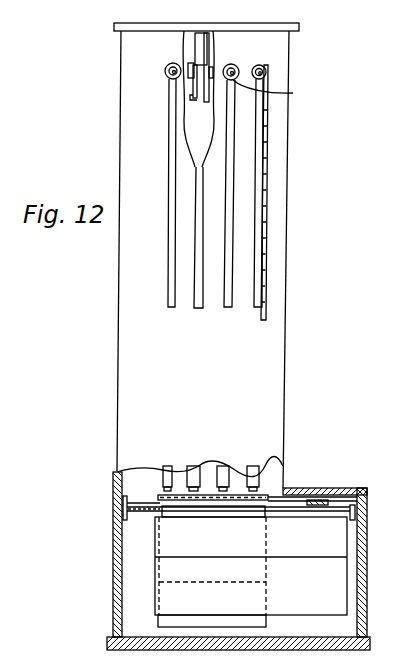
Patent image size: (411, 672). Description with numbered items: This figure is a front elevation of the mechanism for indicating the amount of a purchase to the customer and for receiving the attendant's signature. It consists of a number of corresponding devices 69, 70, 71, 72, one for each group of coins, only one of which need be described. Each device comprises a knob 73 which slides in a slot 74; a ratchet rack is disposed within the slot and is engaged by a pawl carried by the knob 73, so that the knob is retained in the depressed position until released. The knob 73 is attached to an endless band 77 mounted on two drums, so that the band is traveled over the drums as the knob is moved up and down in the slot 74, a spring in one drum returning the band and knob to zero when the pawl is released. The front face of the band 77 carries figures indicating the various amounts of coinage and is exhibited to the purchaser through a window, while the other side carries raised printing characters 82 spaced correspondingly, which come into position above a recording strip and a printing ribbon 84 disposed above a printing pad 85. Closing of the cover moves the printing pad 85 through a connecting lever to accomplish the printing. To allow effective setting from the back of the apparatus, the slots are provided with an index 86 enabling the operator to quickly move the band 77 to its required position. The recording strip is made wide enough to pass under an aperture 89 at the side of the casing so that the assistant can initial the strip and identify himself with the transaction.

The indicating device 69 is at (166, 67).
The indicating device 70 is at (203, 57).
The indicating device 71 is at (238, 66).
The indicating device 72 is at (266, 66).
The knob 73 is at (293, 93).
The slot 74 is at (198, 233).
The endless band 77 is at (168, 482).
The printing characters 82 is at (195, 487).
The printing ribbon 84 is at (237, 495).
The printing pad 85 is at (227, 512).
The index 86 is at (266, 172).
The aperture 89 is at (313, 488).